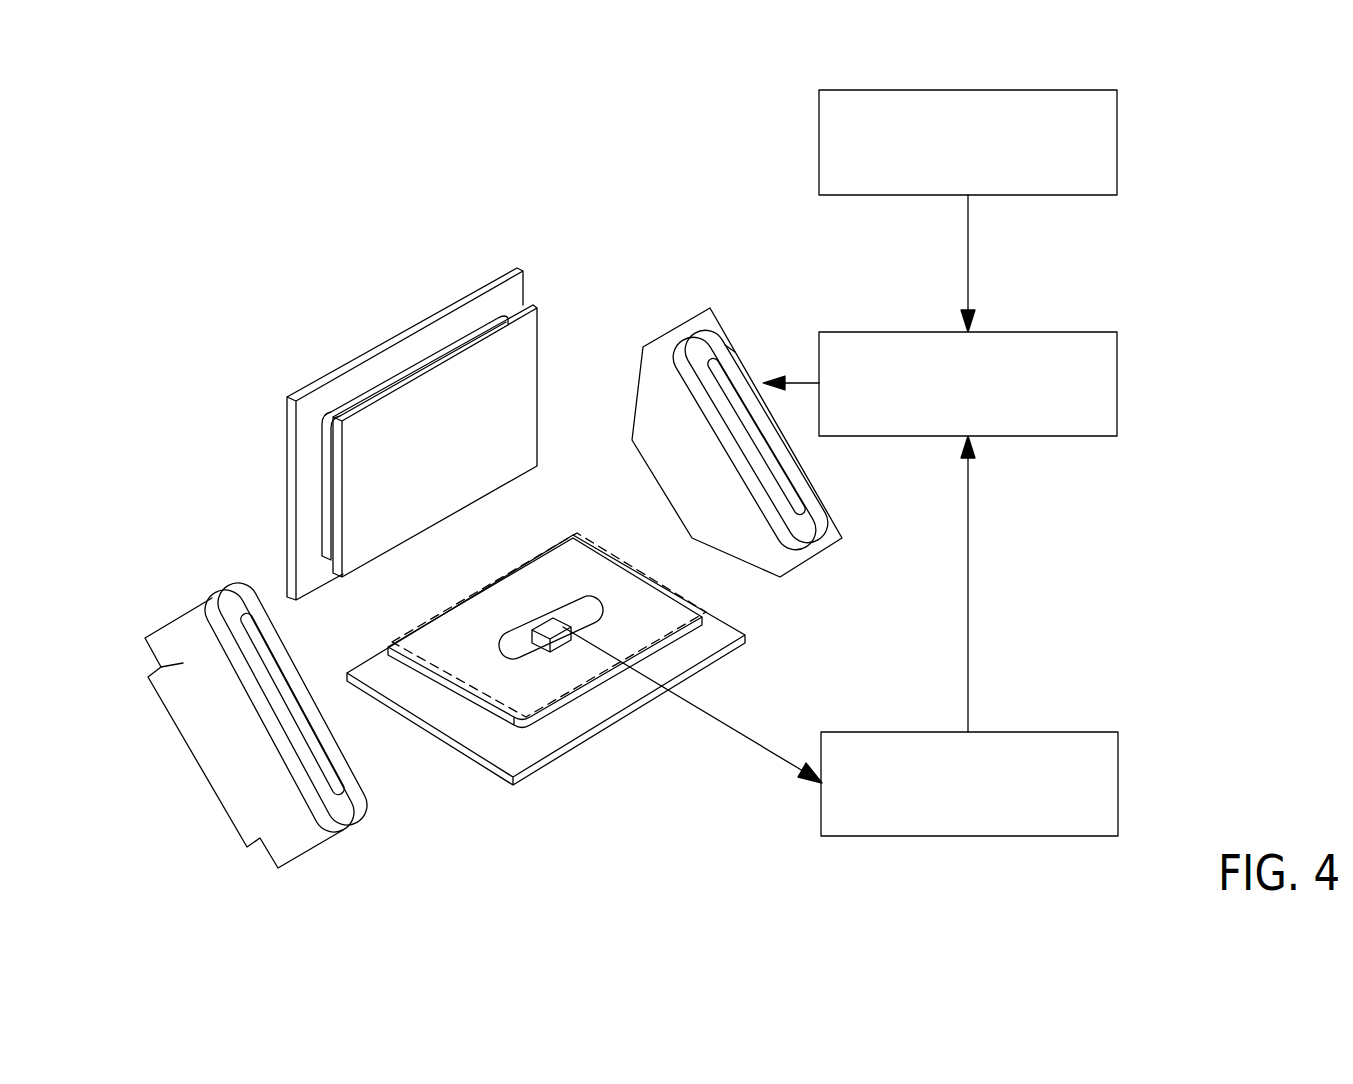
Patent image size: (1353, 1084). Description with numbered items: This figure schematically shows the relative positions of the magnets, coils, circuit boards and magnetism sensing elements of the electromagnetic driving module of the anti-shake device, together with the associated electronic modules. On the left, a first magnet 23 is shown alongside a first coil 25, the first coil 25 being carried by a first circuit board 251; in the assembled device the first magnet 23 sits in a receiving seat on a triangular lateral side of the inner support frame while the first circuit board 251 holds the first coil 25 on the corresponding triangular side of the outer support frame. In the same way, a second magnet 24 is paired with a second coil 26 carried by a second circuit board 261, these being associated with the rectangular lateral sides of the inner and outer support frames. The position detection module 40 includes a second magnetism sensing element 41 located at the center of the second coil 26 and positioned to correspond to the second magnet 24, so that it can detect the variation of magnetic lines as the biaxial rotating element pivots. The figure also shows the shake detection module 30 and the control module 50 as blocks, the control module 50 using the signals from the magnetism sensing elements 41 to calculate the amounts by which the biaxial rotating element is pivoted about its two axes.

The first magnet 23 is at (258, 607).
The second magnet 24 is at (473, 363).
The first coil 25 is at (240, 628).
The second coil 26 is at (393, 370).
The first circuit board 251 is at (183, 663).
The second circuit board 261 is at (307, 407).
The shake detection module 30 is at (1117, 130).
The position detection module 40 is at (1118, 772).
The second magnetism sensing element 41 is at (548, 645).
The control module 50 is at (1117, 388).